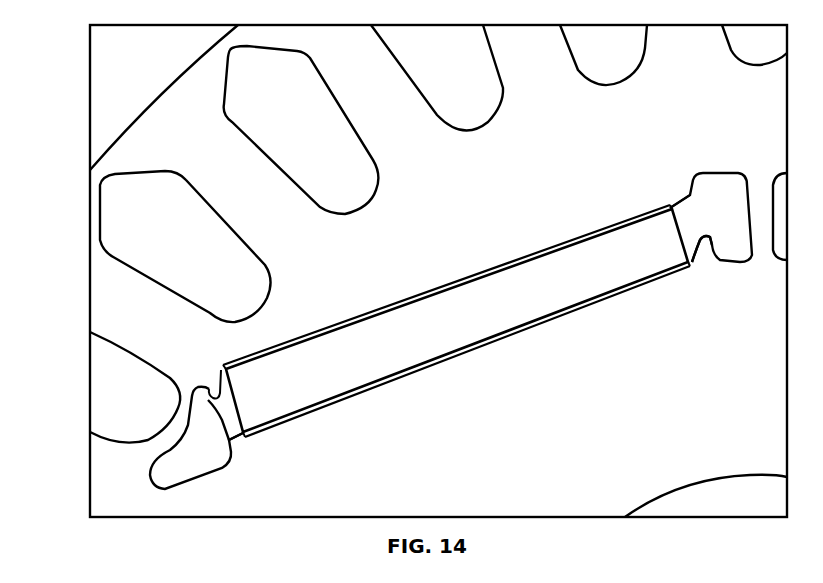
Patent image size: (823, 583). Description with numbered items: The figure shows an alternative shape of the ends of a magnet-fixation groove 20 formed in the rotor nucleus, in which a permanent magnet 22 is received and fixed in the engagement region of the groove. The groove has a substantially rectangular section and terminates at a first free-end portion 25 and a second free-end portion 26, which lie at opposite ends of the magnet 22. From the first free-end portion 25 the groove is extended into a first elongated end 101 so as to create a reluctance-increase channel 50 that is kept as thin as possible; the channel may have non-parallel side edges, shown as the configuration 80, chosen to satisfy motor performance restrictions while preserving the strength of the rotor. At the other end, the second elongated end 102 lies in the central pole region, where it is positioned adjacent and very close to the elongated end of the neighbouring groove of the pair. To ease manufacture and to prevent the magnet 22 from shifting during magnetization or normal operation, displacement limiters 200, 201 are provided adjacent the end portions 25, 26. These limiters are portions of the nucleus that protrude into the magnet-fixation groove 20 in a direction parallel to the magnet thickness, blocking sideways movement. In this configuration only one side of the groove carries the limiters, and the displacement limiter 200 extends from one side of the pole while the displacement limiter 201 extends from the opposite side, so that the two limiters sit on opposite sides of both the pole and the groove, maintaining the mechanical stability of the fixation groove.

The magnet-fixation groove 20 is at (386, 387).
The permanent magnet 22 is at (473, 310).
The first free-end portion 25 is at (236, 409).
The second free-end portion 26 is at (684, 228).
The reluctance-increase channel 50 is at (177, 428).
The reluctance-increase channel with non-parallel side edges 80 is at (758, 228).
The first elongated end 101 is at (205, 453).
The second elongated end 102 is at (725, 218).
The displacement limiter 200 is at (707, 250).
The displacement limiter 201 is at (213, 388).